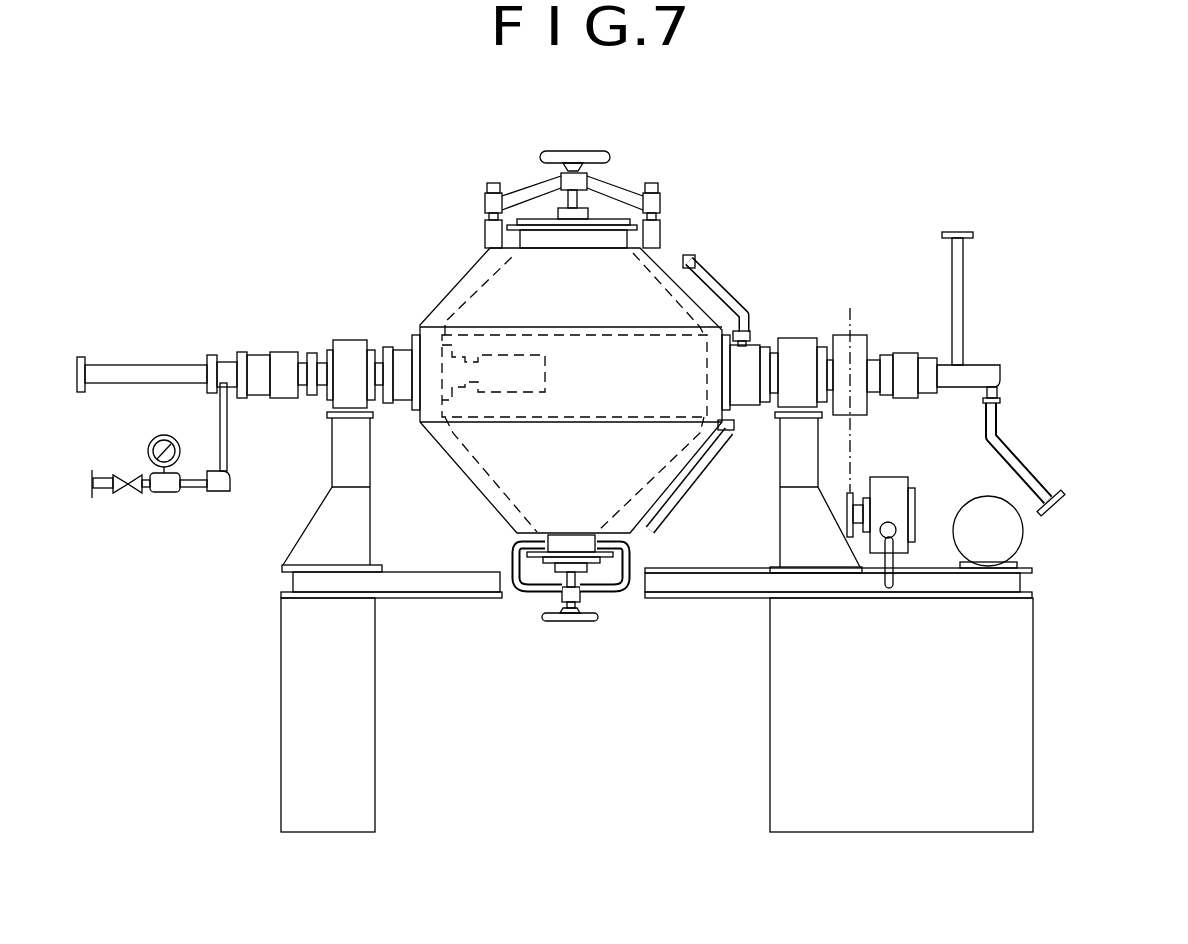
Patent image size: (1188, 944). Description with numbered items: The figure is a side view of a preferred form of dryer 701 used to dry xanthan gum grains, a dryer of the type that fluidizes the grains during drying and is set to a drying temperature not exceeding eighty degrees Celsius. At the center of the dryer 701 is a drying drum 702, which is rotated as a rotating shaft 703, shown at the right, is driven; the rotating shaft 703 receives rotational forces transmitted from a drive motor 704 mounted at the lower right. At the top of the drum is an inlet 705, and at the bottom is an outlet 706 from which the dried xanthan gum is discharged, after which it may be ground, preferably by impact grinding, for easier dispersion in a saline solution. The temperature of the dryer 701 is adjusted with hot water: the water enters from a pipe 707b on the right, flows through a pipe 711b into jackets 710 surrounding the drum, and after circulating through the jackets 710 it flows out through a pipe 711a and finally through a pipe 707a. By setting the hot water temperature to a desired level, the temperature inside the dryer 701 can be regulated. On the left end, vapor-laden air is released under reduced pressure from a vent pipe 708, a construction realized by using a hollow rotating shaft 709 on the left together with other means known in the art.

The dryer 701 is at (1058, 333).
The drying drum 702 is at (638, 470).
The rotating shaft 703 is at (767, 344).
The drive motor 704 is at (907, 533).
The inlet 705 is at (590, 150).
The outlet 706 is at (582, 621).
The pipe 707a is at (962, 296).
The pipe 707b is at (1027, 467).
The vent pipe 708 is at (138, 372).
The hollow rotating shaft 709 is at (383, 340).
The jackets 710 is at (455, 287).
The pipe 711a is at (717, 277).
The pipe 711b is at (707, 472).